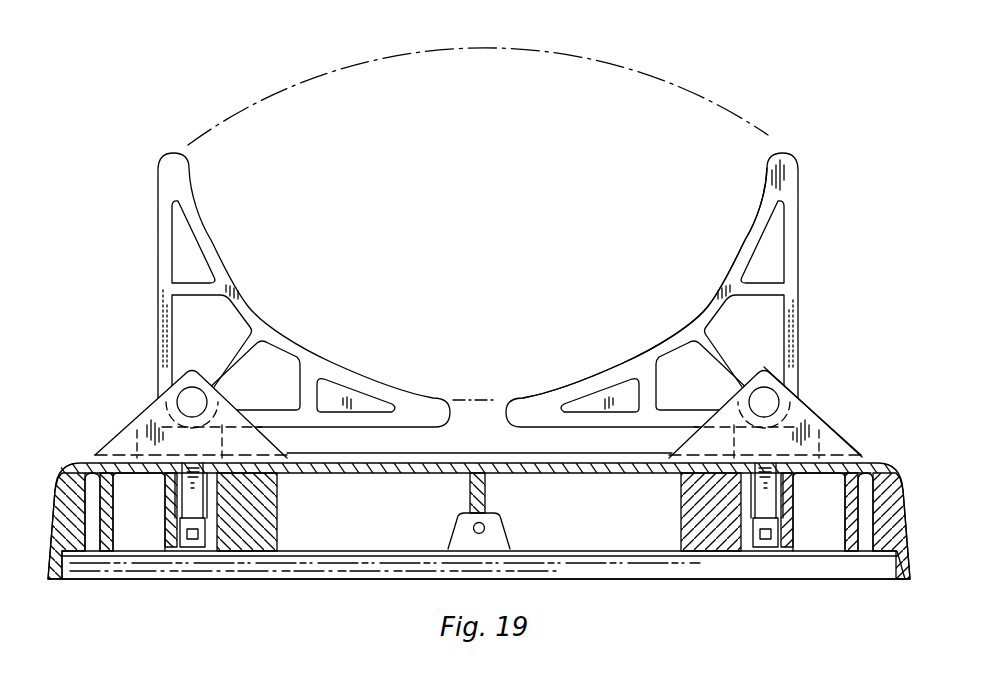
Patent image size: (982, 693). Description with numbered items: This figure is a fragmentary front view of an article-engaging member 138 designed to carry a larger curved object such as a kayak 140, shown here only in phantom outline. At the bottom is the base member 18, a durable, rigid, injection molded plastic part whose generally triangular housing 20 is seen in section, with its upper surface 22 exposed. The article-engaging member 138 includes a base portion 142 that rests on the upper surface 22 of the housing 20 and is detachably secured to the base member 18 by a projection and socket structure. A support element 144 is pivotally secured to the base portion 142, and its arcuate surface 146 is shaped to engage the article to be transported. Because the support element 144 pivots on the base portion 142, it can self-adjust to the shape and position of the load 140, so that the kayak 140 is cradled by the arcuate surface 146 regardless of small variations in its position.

The kayak 140 is at (603, 47).
The support element 144 is at (158, 238).
The arcuate surface 146 is at (744, 240).
The article-engaging member 138 is at (129, 408).
The base portion 142 is at (813, 412).
The upper surface 22 is at (868, 456).
The housing 20 is at (898, 472).
The base member 18 is at (913, 562).